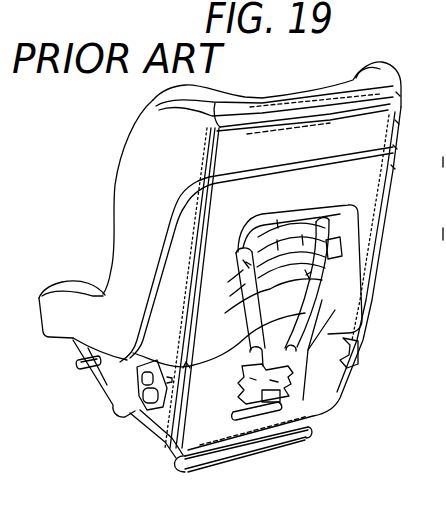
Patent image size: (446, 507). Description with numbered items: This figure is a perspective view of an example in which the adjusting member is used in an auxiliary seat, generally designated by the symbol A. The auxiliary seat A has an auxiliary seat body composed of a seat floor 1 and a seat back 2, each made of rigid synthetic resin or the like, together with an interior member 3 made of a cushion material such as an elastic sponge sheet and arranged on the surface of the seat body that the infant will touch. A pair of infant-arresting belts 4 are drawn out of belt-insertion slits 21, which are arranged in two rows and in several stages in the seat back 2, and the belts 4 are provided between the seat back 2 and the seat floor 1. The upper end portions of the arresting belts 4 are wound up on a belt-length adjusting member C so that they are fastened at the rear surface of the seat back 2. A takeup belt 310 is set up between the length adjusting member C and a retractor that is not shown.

The auxiliary seat A is at (257, 88).
The seat floor 1 is at (103, 375).
The seat back 2 is at (368, 174).
The interior member 3 is at (130, 196).
The infant-arresting belts 4 is at (256, 327).
The belt-insertion slits 21 is at (280, 238).
The takeup belt 310 is at (288, 401).
The belt-length adjusting member C is at (231, 387).